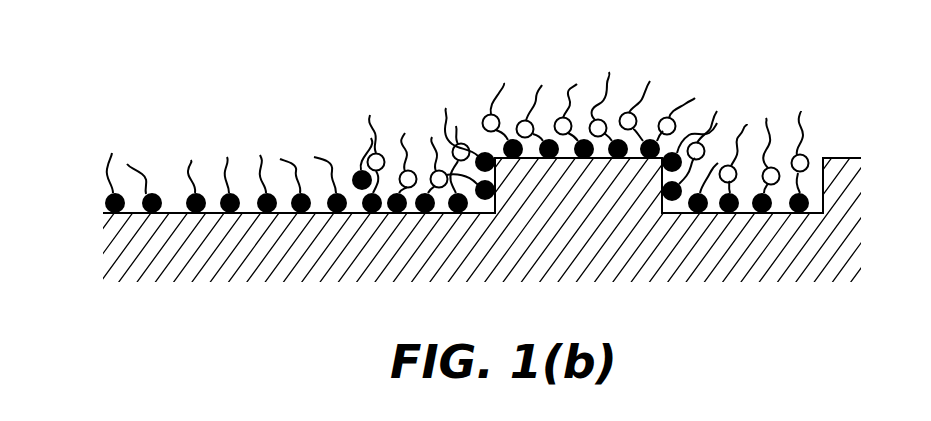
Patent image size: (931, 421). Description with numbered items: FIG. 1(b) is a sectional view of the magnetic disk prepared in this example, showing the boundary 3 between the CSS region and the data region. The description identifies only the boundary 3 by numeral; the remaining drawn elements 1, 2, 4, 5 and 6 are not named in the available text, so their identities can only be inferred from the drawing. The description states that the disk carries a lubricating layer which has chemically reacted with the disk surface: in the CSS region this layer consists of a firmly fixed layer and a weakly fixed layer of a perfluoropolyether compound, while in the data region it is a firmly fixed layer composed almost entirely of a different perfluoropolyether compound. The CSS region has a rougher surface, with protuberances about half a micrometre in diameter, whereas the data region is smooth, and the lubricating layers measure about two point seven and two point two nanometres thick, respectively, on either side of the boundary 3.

The monolayer film of organic molecules 1 is at (253, 102).
The functional group (terminal group) 2 is at (563, 75).
The boundary 3 is at (344, 138).
The molecular chain 4 is at (177, 113).
The molecular chain on projection 5 is at (667, 90).
The substrate 6 is at (696, 267).